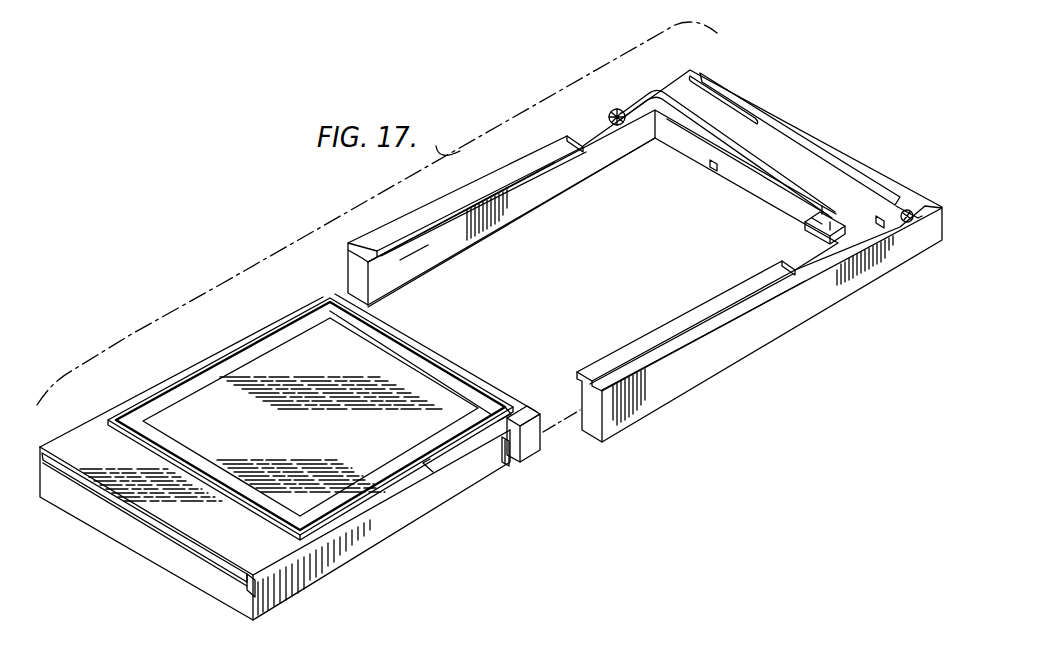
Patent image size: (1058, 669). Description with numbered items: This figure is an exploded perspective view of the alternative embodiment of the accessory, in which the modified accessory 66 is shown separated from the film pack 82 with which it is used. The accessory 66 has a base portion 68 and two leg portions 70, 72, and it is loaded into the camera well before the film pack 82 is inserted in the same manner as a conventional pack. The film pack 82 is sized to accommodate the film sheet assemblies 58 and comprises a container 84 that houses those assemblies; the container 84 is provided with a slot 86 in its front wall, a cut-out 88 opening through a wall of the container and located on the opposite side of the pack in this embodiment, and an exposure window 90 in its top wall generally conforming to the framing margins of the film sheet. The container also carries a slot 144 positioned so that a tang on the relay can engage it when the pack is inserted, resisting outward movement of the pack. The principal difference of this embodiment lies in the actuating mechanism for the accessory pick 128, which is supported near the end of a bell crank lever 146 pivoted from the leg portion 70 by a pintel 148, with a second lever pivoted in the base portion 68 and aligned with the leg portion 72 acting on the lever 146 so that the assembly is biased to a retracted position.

The film sheet assemblies 58 is at (326, 434).
The accessory 66 is at (834, 313).
The base portion 68 is at (823, 143).
The leg portion 70 is at (523, 170).
The leg portion 72 is at (690, 363).
The film pack 82 is at (266, 317).
The container 84 is at (383, 527).
The slot 86 is at (177, 537).
The cut-out 88 is at (513, 413).
The exposure window 90 is at (387, 355).
The accessory pick 128 is at (820, 222).
The slot 144 is at (513, 453).
The bell crank lever 146 is at (762, 133).
The pintel 148 is at (621, 110).